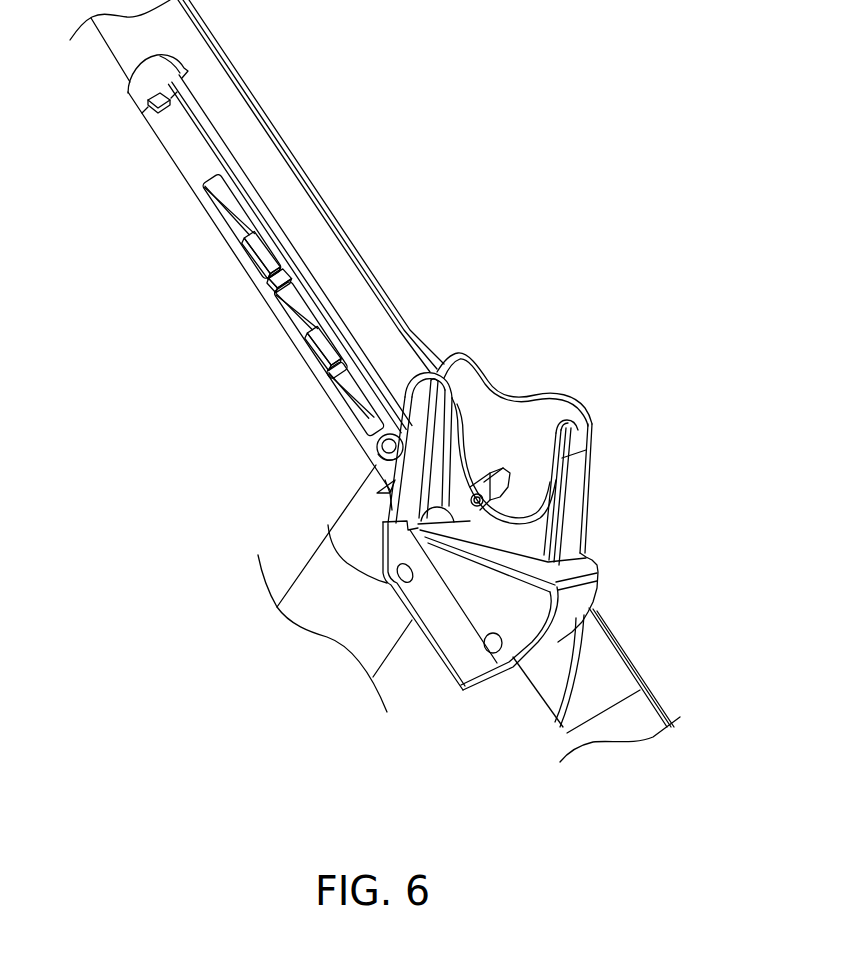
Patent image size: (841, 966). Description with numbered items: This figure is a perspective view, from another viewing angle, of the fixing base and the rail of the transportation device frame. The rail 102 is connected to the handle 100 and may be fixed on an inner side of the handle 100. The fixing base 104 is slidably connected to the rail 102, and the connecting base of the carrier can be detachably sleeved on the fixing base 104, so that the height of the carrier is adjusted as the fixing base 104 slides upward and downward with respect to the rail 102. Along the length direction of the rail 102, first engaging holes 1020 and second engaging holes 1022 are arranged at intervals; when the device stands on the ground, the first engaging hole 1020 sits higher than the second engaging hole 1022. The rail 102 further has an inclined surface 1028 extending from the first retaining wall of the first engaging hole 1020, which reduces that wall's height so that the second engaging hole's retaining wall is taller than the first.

The handle 100 is at (253, 100).
The rail 102 is at (159, 140).
The fixing base 104 is at (587, 480).
The first engaging hole 1020 is at (227, 220).
The second engaging hole 1022 is at (353, 417).
The inclined surface 1028 is at (263, 260).